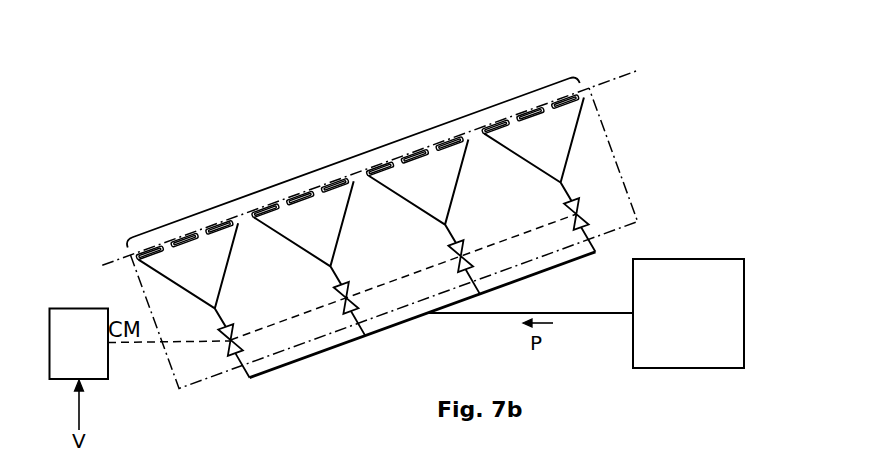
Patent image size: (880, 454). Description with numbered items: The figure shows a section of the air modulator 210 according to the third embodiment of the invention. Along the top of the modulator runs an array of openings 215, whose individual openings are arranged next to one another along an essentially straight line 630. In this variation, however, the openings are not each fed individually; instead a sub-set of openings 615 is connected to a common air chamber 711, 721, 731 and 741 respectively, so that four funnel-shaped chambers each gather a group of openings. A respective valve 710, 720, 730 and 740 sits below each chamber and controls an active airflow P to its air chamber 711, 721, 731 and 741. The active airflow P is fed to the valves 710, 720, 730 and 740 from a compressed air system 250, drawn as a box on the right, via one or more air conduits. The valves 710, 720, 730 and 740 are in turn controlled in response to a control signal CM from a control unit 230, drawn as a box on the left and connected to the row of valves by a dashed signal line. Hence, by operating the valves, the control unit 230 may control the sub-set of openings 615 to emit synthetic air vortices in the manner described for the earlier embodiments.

The air modulator 210 is at (600, 120).
The array of openings 215 is at (355, 157).
The control unit 230 is at (93, 380).
The compressed air system 250 is at (673, 259).
The sub-set of openings 615 is at (455, 137).
The essentially straight line 630 is at (622, 83).
The valve 710 is at (233, 327).
The common air chamber 711 is at (212, 267).
The valve 720 is at (350, 284).
The common air chamber 721 is at (328, 222).
The valve 730 is at (466, 246).
The common air chamber 731 is at (448, 179).
The valve 740 is at (580, 207).
The common air chamber 741 is at (563, 136).